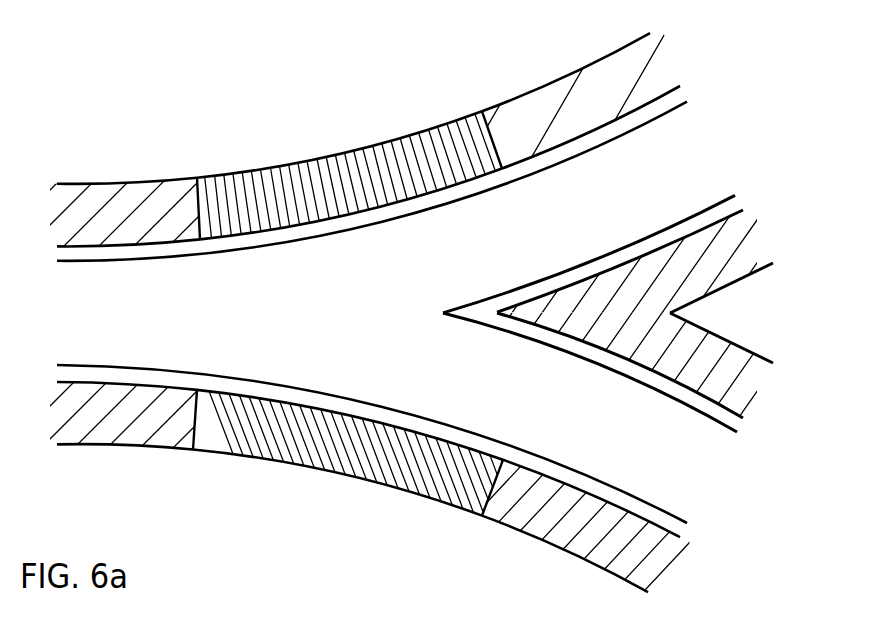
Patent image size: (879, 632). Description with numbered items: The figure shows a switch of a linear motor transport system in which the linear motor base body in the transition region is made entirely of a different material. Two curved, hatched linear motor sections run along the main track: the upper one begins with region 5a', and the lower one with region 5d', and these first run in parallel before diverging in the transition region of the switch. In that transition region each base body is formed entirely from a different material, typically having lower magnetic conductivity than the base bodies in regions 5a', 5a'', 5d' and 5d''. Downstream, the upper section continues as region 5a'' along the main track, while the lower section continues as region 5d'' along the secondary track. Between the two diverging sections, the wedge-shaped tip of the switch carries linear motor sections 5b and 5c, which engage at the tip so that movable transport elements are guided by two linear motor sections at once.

The linear motor base body region 5a' is at (157, 189).
The linear motor base body region 5a'' is at (630, 95).
The linear motor section 5b is at (735, 258).
The linear motor section 5c is at (732, 368).
The linear motor base body region 5d' is at (158, 440).
The linear motor base body region 5d'' is at (620, 520).